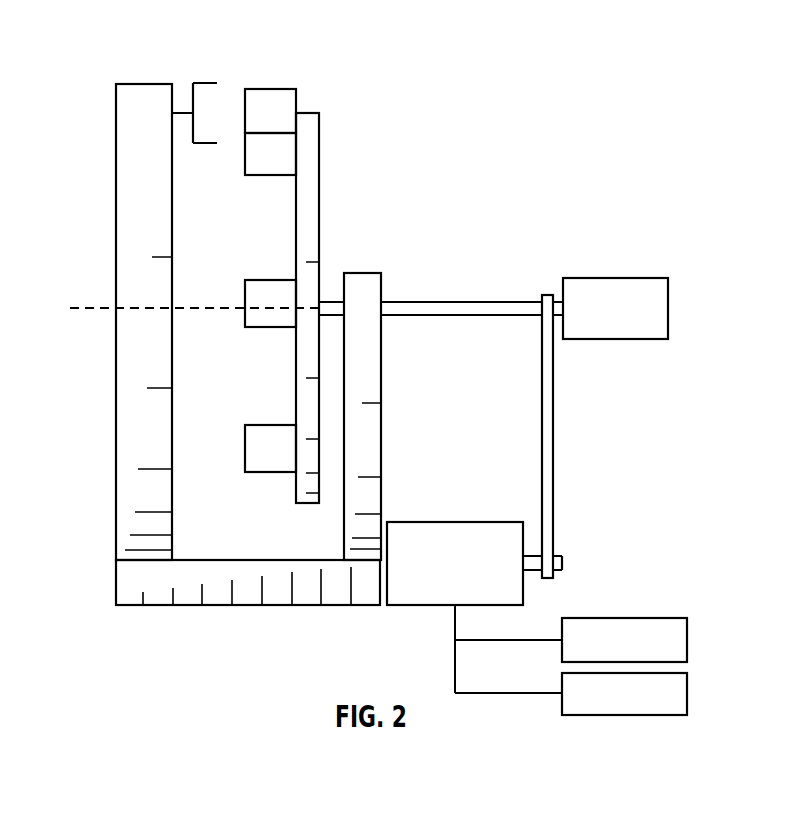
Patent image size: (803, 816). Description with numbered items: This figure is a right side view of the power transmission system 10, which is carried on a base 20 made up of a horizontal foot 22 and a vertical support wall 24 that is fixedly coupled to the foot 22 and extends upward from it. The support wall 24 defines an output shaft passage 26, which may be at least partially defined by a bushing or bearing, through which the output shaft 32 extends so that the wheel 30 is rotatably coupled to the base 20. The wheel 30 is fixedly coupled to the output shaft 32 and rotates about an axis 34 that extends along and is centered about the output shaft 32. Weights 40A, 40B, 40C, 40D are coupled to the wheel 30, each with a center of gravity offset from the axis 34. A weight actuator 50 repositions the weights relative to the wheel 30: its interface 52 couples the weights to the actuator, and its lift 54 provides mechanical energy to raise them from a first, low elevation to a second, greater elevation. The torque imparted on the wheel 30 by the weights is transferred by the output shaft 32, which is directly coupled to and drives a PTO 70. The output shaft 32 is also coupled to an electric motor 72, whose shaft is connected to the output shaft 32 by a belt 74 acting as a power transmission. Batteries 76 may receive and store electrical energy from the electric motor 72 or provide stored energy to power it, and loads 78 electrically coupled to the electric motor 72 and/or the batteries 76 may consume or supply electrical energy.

The system 10 is at (697, 56).
The base 20 is at (235, 607).
The foot 22 is at (162, 585).
The support wall 24 is at (373, 468).
The output shaft passage 26 is at (383, 300).
The wheel 30 is at (309, 198).
The output shaft 32 is at (525, 305).
The axis 34 is at (147, 308).
The weight 40A is at (285, 98).
The weight 40B is at (290, 157).
The weight 40C is at (272, 280).
The weight 40D is at (272, 425).
The weight actuator 50 is at (121, 50).
The interface 52 is at (205, 83).
The lift 54 is at (128, 130).
The PTO 70 is at (635, 339).
The electric motor 72 is at (473, 522).
The belt 74 is at (553, 480).
The batteries 76 is at (690, 638).
The loads 78 is at (690, 692).